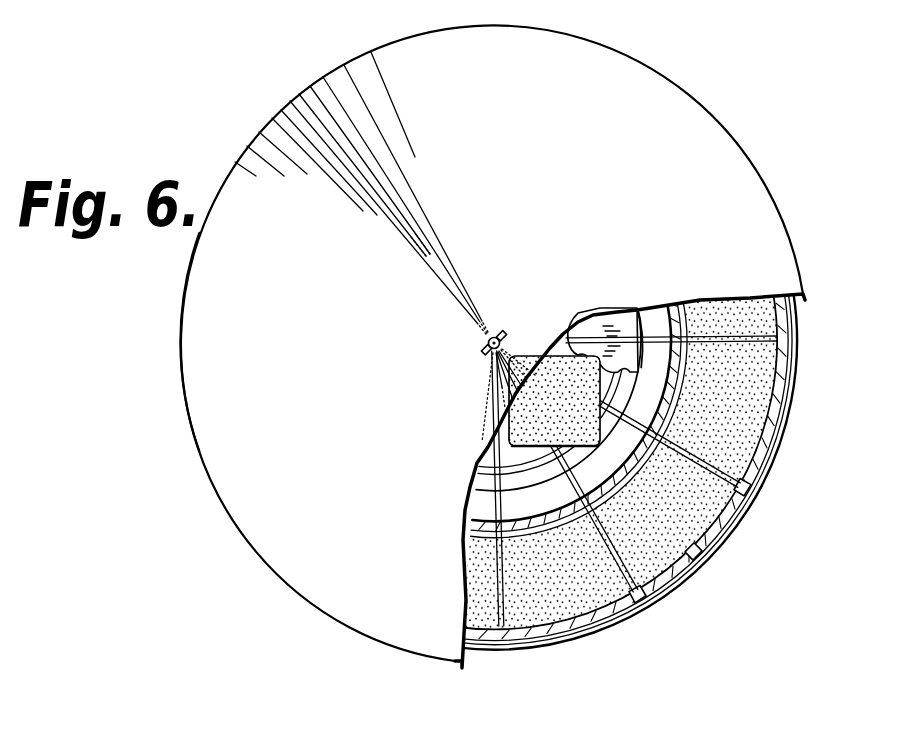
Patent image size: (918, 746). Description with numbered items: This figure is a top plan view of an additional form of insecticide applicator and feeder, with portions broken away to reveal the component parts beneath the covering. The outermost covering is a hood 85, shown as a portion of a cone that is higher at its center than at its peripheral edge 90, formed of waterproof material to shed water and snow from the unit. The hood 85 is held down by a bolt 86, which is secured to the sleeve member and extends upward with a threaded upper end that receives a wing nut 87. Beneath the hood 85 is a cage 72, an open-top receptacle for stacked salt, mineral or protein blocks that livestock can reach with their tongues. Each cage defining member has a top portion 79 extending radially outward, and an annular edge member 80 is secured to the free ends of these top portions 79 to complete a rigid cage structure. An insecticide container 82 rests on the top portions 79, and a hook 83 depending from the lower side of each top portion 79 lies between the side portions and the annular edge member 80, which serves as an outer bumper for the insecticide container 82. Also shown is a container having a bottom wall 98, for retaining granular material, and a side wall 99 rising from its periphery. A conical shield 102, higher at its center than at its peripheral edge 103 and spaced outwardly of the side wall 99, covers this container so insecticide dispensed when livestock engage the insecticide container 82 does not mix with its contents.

The cage 72 is at (628, 413).
The top portion 79 is at (562, 457).
The annular edge member 80 is at (696, 530).
The insecticide container 82 is at (597, 598).
The hook 83 is at (547, 511).
The hood 85 is at (680, 100).
The bolt 86 is at (496, 337).
The wing nut 87 is at (487, 349).
The peripheral edge 90 is at (183, 291).
The bottom wall 98 is at (476, 460).
The side wall 99 is at (471, 479).
The shield 102 is at (606, 316).
The peripheral edge 103 is at (643, 318).